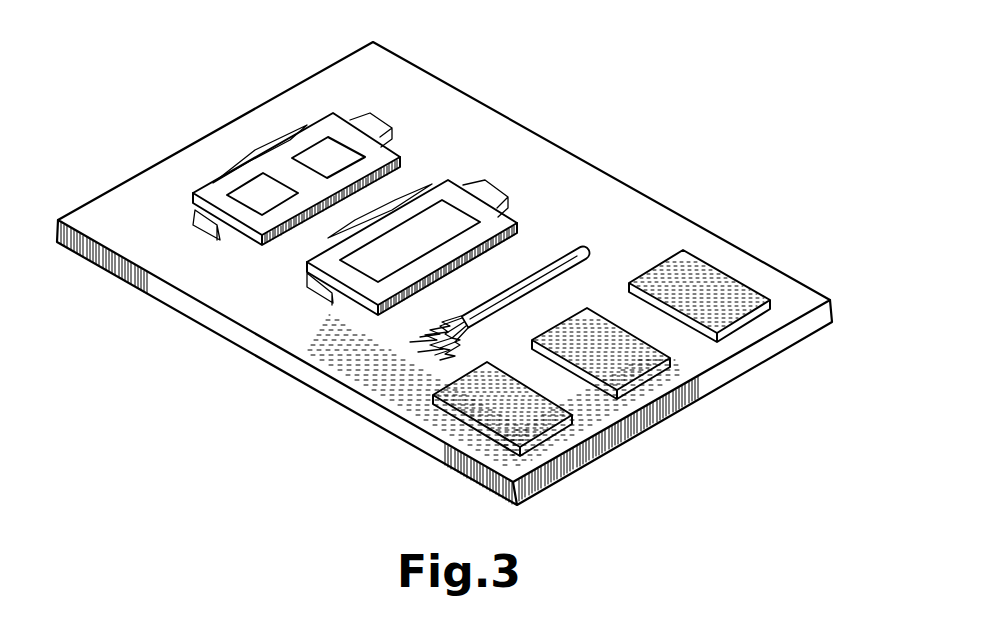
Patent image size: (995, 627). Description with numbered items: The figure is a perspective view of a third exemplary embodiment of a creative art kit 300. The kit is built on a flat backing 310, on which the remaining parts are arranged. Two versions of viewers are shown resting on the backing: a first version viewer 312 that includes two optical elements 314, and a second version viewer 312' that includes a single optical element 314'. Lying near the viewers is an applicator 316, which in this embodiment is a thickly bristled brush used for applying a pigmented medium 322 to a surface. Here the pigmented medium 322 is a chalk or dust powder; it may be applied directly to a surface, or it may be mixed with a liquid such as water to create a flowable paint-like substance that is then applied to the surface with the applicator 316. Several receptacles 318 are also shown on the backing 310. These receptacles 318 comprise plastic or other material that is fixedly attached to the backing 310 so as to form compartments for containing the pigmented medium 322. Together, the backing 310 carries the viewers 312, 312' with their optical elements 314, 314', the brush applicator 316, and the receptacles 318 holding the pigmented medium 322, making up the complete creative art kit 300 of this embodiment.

The creative art kit 300 is at (663, 64).
The backing 310 is at (398, 73).
The viewer 312 is at (390, 162).
The viewer 312' is at (499, 230).
The optical elements 314 is at (236, 137).
The optical element 314' is at (339, 299).
The applicator 316 is at (577, 248).
The receptacles 318 is at (568, 320).
The pigmented medium 322 is at (567, 440).